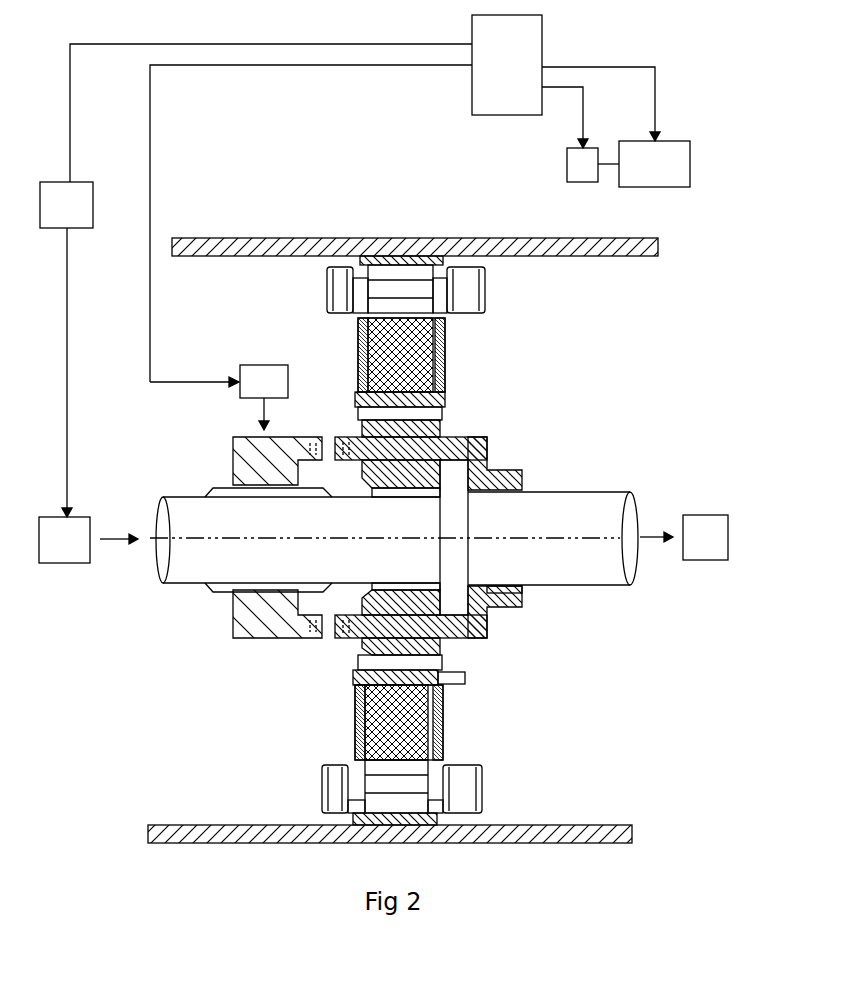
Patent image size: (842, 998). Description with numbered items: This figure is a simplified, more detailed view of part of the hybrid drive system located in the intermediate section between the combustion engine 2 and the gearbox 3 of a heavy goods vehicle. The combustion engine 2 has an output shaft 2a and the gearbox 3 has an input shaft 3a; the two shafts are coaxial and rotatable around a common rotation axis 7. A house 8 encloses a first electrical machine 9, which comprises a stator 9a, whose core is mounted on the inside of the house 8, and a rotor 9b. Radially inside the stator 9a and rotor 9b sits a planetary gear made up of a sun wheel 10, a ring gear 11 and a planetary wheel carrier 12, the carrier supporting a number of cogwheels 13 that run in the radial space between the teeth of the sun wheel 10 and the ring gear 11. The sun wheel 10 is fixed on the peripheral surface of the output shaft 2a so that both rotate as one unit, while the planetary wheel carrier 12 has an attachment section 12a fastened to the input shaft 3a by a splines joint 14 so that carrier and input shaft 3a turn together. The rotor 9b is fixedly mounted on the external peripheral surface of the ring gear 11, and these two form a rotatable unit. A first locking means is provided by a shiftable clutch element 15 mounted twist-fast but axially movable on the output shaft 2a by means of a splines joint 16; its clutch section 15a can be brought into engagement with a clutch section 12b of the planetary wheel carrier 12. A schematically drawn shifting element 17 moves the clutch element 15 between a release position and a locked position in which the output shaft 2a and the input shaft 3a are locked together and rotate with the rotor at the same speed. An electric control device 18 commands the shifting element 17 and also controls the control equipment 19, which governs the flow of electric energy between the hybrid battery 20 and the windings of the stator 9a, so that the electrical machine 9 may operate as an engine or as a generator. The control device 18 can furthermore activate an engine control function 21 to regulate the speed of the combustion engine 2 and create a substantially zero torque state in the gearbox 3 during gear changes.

The combustion engine 2 is at (67, 545).
The output shaft 2a is at (193, 562).
The gearbox 3 is at (707, 542).
The input shaft 3a is at (582, 565).
The common rotation axis 7 is at (585, 537).
The house 8 is at (247, 825).
The first electrical machine 9 is at (298, 293).
The stator 9a is at (465, 300).
The rotor 9b is at (380, 350).
The sun wheel 10 is at (388, 488).
The ring gear 11 is at (387, 400).
The planetary wheel carrier 12 is at (468, 640).
The attachment section 12a is at (503, 598).
The clutch section 12b is at (335, 628).
The cogwheels 13 is at (390, 430).
The splines joint 14 is at (522, 594).
The clutch element 15 is at (248, 468).
The clutch section 15a is at (313, 630).
The splines joint 16 is at (215, 490).
The shifting element 17 is at (265, 372).
The electric control device 18 is at (507, 65).
The control equipment 19 is at (582, 165).
The hybrid battery 20 is at (663, 163).
The engine control function 21 is at (70, 200).